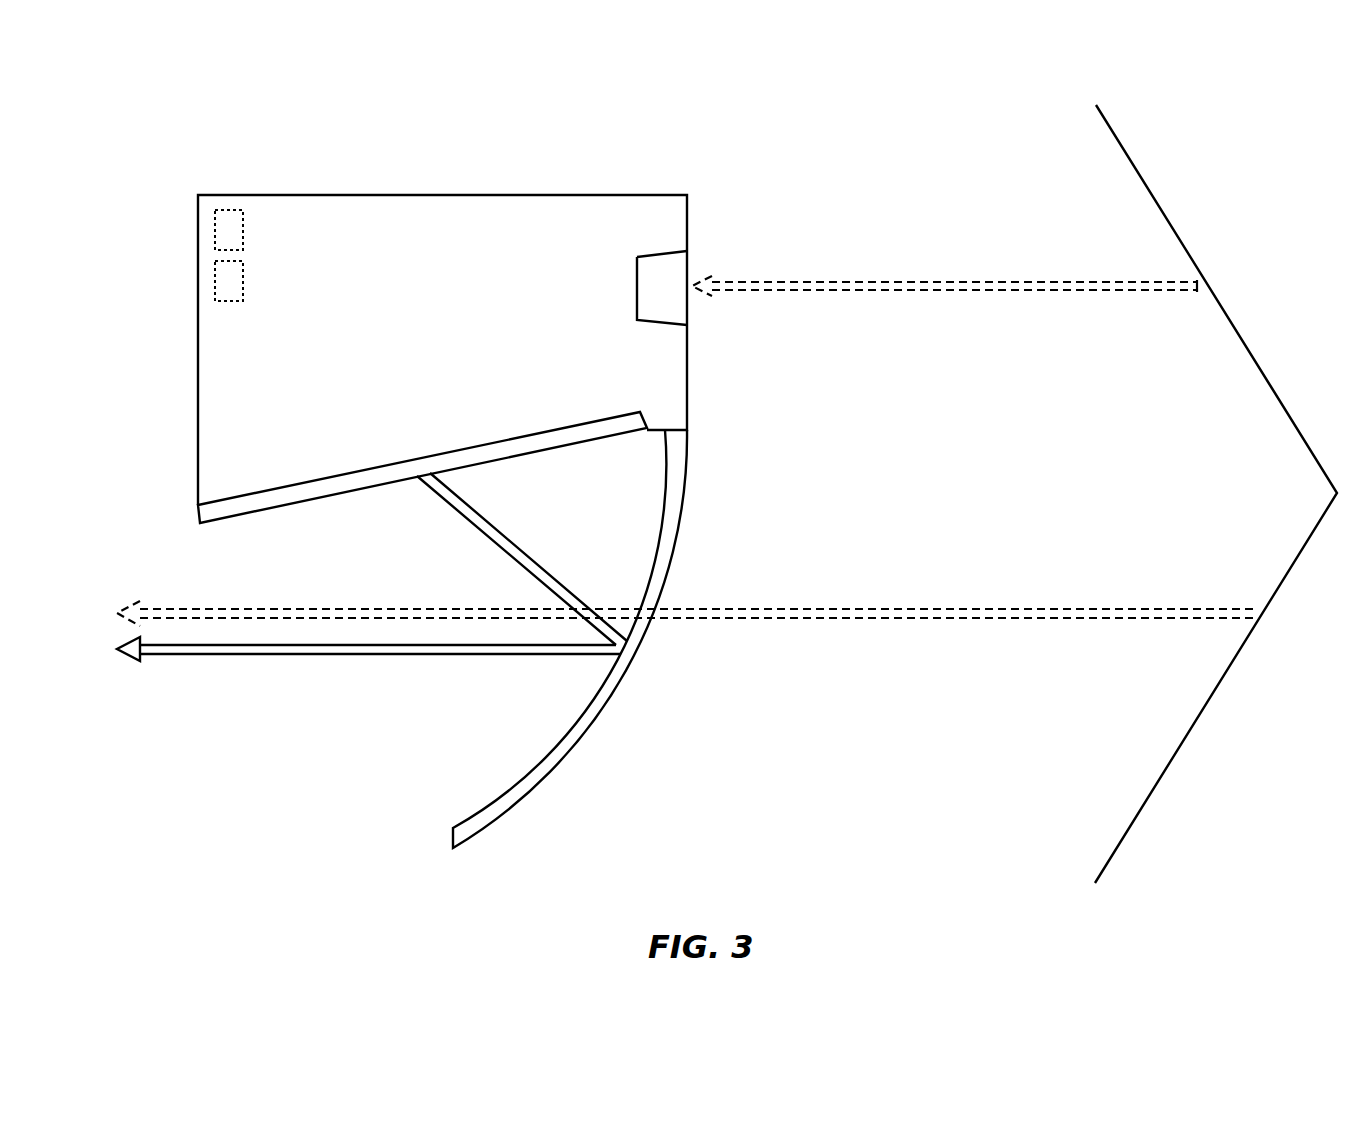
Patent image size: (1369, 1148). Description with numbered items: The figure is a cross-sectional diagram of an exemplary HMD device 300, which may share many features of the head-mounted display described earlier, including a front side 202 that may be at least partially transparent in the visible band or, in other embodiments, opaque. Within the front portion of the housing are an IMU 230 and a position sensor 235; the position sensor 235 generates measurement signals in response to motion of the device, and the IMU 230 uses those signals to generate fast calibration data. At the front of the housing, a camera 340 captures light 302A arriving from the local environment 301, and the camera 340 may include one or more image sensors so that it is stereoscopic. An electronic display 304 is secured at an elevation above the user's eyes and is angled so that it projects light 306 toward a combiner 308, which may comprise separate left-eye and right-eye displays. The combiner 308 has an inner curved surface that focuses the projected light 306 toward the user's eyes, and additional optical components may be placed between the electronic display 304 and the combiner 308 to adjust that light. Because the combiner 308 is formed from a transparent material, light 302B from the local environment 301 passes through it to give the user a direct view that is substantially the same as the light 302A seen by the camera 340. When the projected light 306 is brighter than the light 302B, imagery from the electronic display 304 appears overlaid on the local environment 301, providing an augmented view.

The HMD device 300 is at (255, 124).
The front side 202 is at (545, 194).
The IMU 230 is at (215, 235).
The position sensor 235 is at (215, 283).
The camera 340 is at (667, 252).
The electronic display 304 is at (422, 457).
The projected light 306 is at (515, 557).
The combiner 308 is at (676, 532).
The light 302A is at (950, 281).
The light 302B is at (958, 608).
The local environment 301 is at (1227, 670).